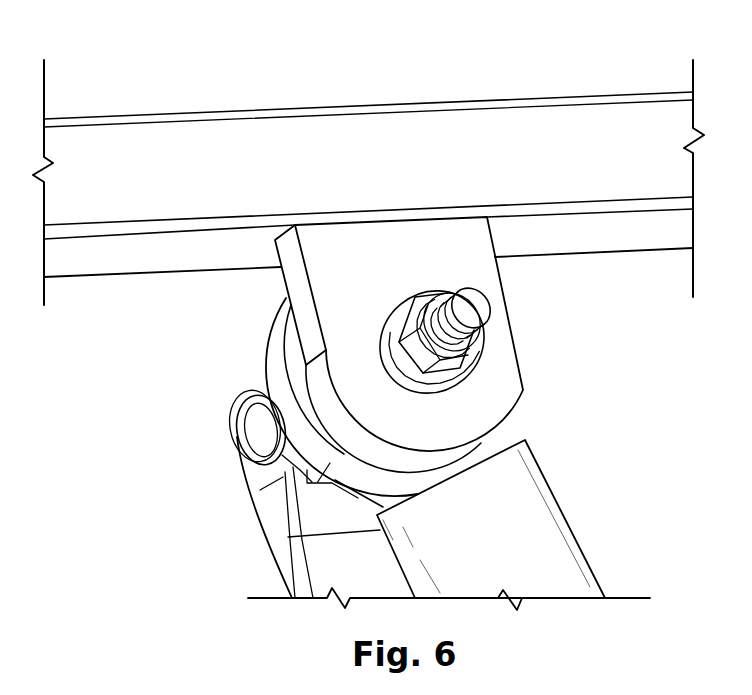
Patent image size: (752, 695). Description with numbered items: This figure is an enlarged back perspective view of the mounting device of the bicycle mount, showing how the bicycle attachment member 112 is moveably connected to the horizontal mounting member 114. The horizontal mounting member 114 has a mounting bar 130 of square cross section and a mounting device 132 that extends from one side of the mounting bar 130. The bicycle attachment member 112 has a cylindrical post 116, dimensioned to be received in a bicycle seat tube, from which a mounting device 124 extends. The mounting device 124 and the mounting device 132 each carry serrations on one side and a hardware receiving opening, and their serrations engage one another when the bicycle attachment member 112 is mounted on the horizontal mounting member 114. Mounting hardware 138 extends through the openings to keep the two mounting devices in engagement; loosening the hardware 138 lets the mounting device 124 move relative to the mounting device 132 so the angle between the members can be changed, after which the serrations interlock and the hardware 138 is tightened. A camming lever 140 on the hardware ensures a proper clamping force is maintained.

The bicycle attachment member 112 is at (597, 518).
The horizontal mounting member 114 is at (506, 84).
The cylindrical post 116 is at (535, 487).
The mounting device 124 is at (272, 362).
The mounting bar 130 is at (177, 140).
The mounting device 132 is at (479, 242).
The mounting hardware 138 is at (490, 338).
The camming lever 140 is at (273, 562).